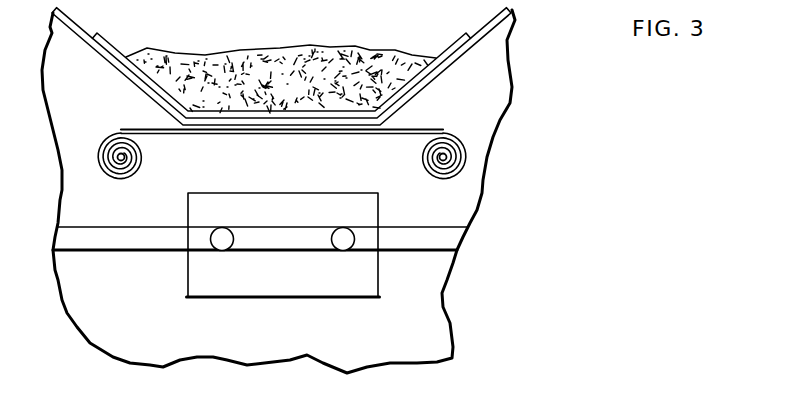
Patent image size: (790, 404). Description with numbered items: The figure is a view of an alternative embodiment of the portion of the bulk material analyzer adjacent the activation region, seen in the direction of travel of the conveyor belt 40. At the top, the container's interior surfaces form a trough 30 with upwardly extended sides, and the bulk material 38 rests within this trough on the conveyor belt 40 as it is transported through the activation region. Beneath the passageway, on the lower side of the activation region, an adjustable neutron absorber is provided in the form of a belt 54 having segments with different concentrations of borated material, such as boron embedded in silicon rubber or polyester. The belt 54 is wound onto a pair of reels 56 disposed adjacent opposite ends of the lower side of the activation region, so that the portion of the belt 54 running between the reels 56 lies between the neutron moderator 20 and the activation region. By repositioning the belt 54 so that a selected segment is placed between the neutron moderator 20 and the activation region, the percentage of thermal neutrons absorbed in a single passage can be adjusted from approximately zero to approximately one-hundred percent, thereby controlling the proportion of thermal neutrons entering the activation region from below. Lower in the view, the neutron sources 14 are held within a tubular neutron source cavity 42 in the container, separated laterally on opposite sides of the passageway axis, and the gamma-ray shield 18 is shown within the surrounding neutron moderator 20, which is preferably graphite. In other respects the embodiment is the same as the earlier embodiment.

The neutron sources 14 is at (210, 239).
The gamma-ray shield 18 is at (283, 290).
The neutron moderator 20 is at (80, 100).
The trough 30 is at (497, 33).
The bulk material 38 is at (322, 47).
The conveyor belt 40 is at (452, 35).
The neutron source cavity 42 is at (453, 226).
The belt 54 is at (426, 127).
The reels 56 is at (469, 147).